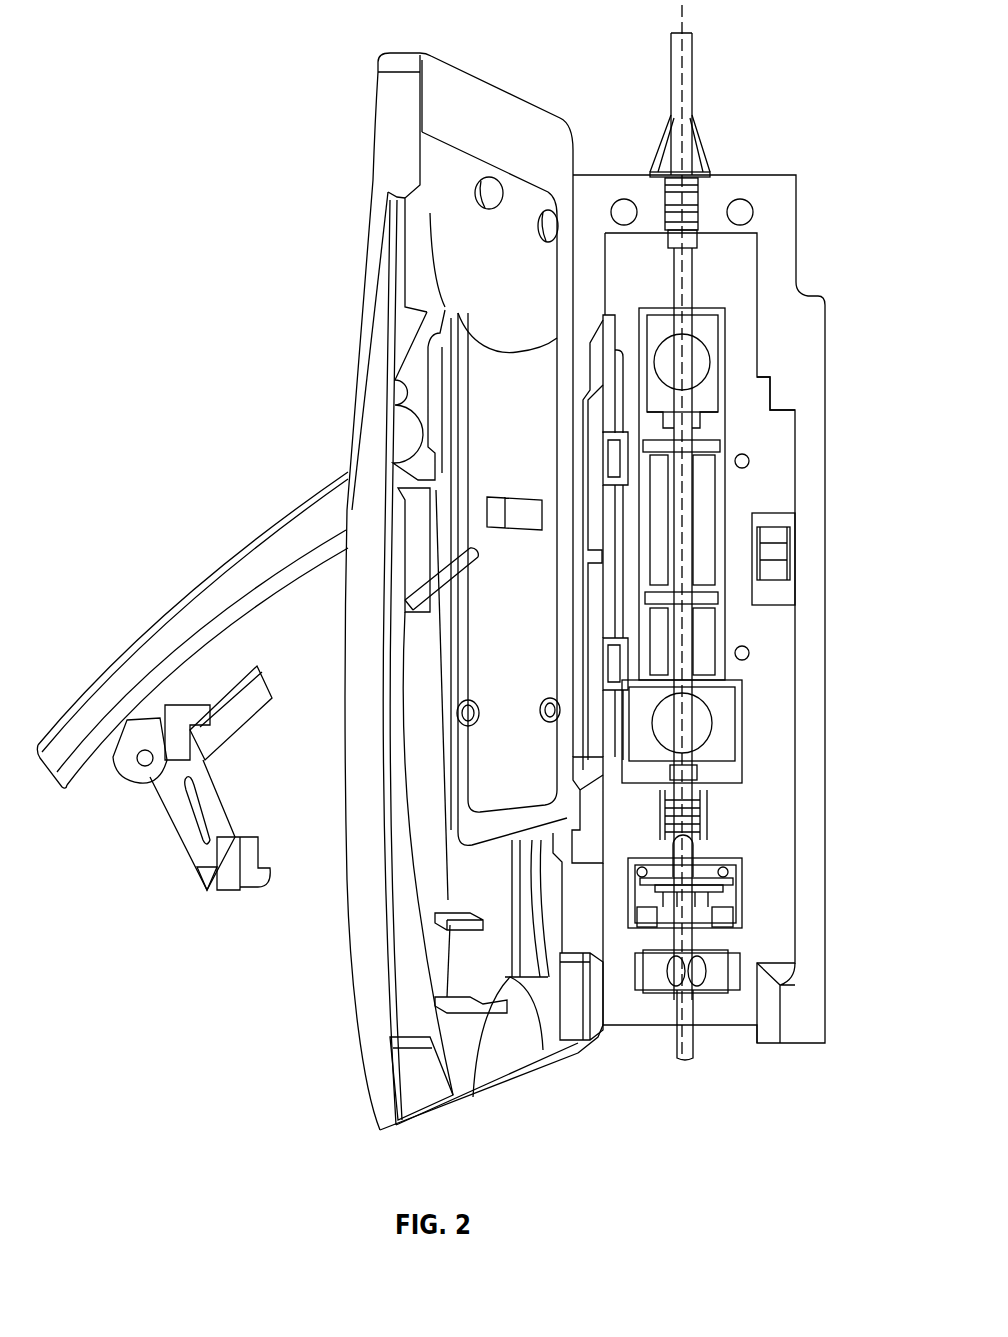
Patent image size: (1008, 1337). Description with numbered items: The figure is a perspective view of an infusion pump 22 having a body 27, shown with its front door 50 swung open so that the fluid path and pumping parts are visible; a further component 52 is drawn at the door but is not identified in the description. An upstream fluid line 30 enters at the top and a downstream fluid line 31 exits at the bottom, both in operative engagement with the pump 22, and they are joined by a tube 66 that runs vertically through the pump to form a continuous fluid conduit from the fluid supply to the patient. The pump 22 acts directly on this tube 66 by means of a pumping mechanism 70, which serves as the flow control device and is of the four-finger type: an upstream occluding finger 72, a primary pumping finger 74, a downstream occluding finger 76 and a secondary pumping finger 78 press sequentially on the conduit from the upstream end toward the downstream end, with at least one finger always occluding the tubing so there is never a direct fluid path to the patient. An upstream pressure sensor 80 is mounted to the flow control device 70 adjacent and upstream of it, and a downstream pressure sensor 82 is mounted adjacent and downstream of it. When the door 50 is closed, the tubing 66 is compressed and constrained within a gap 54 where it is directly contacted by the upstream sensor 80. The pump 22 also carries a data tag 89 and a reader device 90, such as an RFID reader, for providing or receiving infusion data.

The infusion pump 22 is at (765, 175).
The body 27 is at (770, 898).
The upstream fluid line 30 is at (698, 52).
The downstream fluid line 31 is at (700, 1045).
The front door 50 is at (385, 108).
The lid 52 is at (165, 620).
The gap 54 is at (698, 196).
The tube 66 is at (688, 275).
The pumping mechanism 70 is at (757, 395).
The upstream occluding finger 72 is at (720, 445).
The primary pumping finger 74 is at (703, 505).
The downstream occluding finger 76 is at (720, 597).
The secondary pumping finger 78 is at (703, 640).
The upstream pressure sensor 80 is at (710, 358).
The downstream pressure sensor 82 is at (712, 720).
The data tag 89 is at (755, 212).
The reader device 90 is at (624, 198).